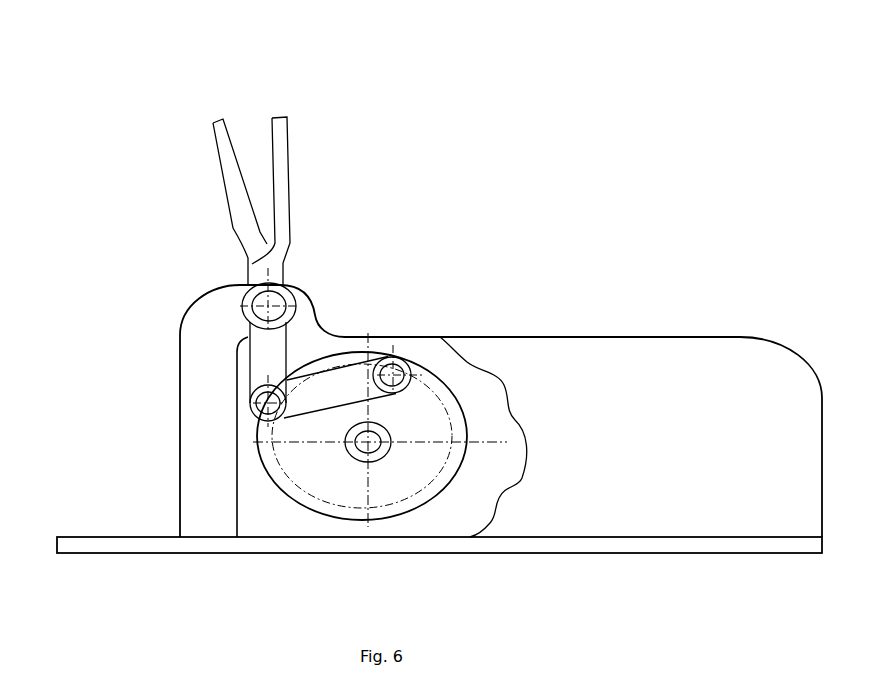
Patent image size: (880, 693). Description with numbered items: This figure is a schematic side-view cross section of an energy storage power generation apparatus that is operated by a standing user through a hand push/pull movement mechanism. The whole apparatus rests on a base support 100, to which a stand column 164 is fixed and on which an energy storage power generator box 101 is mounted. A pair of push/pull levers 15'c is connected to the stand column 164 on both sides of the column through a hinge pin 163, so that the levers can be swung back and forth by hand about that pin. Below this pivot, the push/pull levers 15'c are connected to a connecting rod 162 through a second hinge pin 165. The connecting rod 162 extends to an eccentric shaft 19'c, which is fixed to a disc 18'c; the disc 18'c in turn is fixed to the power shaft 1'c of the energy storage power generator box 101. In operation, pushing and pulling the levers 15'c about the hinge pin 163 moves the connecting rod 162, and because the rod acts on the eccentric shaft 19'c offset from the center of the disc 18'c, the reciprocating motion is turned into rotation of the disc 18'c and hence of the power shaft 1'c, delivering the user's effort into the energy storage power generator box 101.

The base support 100 is at (140, 546).
The energy storage power generator box 101 is at (622, 373).
The stand column 164 is at (212, 313).
The hinge pin 165 is at (252, 393).
The hinge pin 163 is at (284, 281).
The connecting rod 162 is at (327, 389).
The push/pull levers 15'c is at (158, 202).
The eccentric shaft 19'c is at (497, 209).
The disc 18'c is at (571, 281).
The power shaft 1'c is at (262, 430).